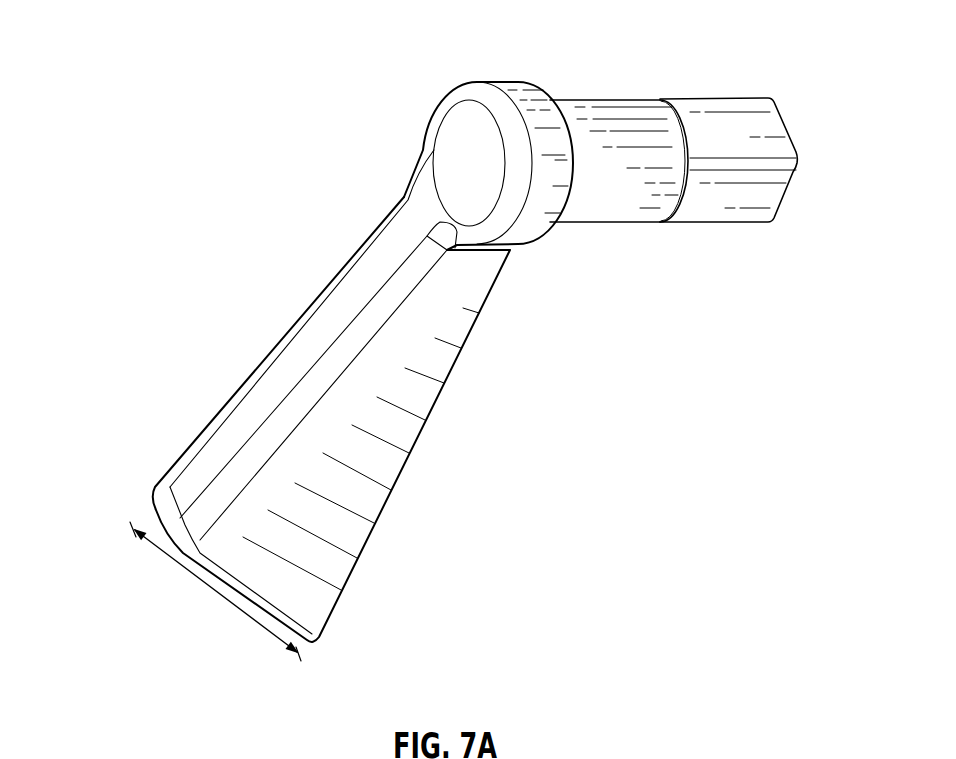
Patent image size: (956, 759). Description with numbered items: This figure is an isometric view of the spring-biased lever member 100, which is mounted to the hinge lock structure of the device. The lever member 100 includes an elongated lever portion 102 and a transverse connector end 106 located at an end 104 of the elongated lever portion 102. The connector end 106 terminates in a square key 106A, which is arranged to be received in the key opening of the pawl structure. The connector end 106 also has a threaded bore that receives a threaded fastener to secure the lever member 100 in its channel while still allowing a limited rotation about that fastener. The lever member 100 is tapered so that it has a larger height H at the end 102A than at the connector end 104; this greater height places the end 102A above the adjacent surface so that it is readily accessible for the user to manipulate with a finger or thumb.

The spring-biased lever member 100 is at (303, 94).
The elongated lever portion 102 is at (553, 265).
The end of the elongated lever portion 102A is at (165, 482).
The end of the elongated lever portion 104 is at (462, 92).
The transverse connector end 106 is at (622, 99).
The square key 106A is at (740, 222).
The height H is at (223, 600).